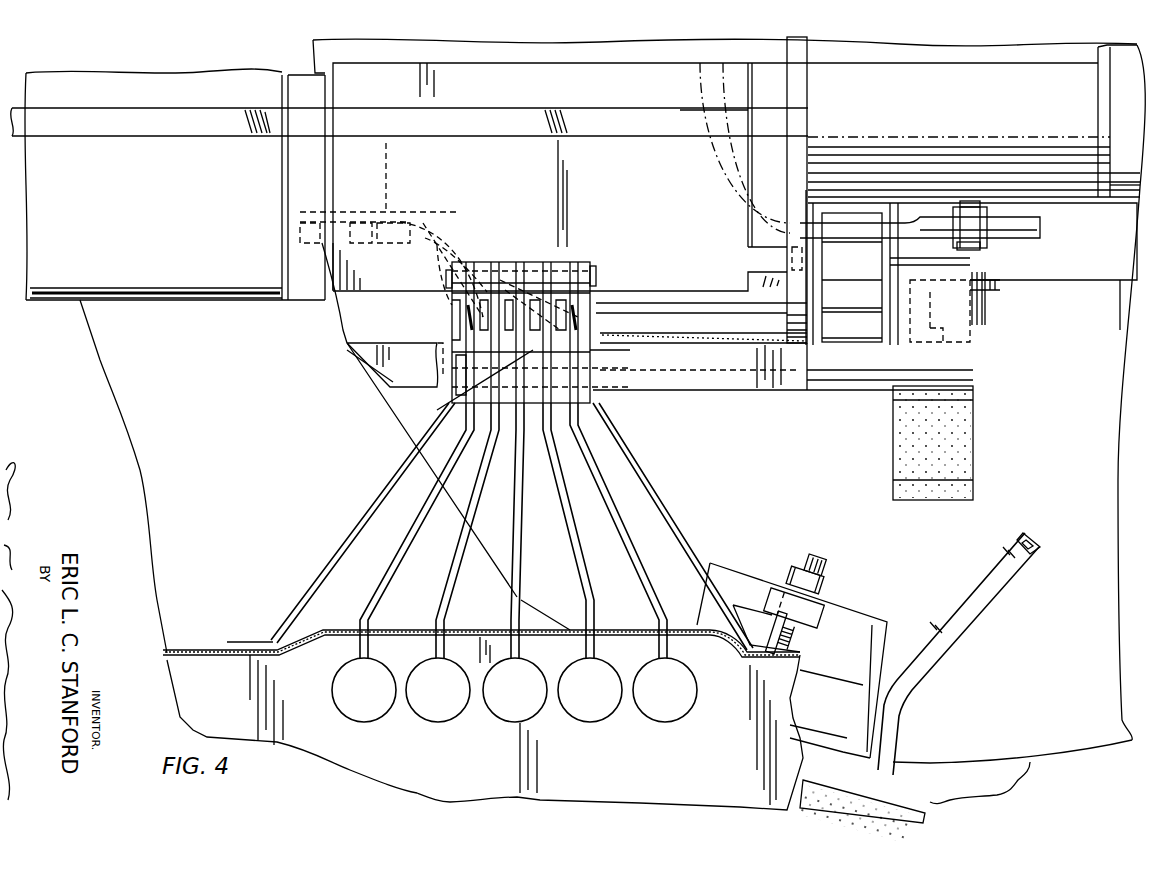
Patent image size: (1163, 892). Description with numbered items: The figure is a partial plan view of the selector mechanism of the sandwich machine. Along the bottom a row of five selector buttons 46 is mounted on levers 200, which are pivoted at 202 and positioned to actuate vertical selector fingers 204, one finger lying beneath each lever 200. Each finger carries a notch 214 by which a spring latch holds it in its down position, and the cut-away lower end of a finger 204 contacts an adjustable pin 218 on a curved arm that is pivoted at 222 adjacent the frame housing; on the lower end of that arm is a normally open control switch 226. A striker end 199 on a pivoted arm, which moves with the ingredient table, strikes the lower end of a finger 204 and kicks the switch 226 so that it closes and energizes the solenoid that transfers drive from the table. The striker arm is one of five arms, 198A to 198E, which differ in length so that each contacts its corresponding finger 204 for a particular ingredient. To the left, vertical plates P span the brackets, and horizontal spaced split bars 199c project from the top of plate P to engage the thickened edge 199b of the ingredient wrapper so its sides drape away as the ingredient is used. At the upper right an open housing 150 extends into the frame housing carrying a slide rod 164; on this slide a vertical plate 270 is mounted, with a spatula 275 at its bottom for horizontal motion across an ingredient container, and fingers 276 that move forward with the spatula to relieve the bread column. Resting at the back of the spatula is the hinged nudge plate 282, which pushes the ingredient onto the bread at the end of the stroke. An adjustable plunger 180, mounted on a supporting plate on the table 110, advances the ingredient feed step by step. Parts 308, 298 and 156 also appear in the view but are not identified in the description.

The spatula 275 is at (543, 83).
The bar 308 is at (495, 133).
The hinged prod or nudge plate 282 is at (685, 185).
The vertical plate 270 is at (792, 93).
The slide rod 164 is at (1125, 88).
The striker arm 198A is at (456, 246).
The striker arm 198E is at (468, 257).
The pivot 202 is at (597, 280).
The vertical selector fingers 204 is at (470, 334).
The notch 214 is at (453, 350).
The adjustable pin 218 is at (460, 380).
The fingers 276 is at (393, 377).
The levers 200 is at (393, 574).
The nut 298 is at (987, 247).
The pivot 222 is at (973, 265).
The open housing 150 is at (1050, 273).
The housing member 156 is at (972, 345).
The control switch 226 is at (965, 430).
The adjustable plunger 180 is at (818, 566).
The striker end 199 is at (1030, 536).
The table 110 is at (1077, 747).
The thickened edge 199b is at (112, 302).
The horizontal spaced split bars 199c is at (205, 302).
The vertical plates P is at (289, 182).
The selector buttons 46 is at (378, 713).